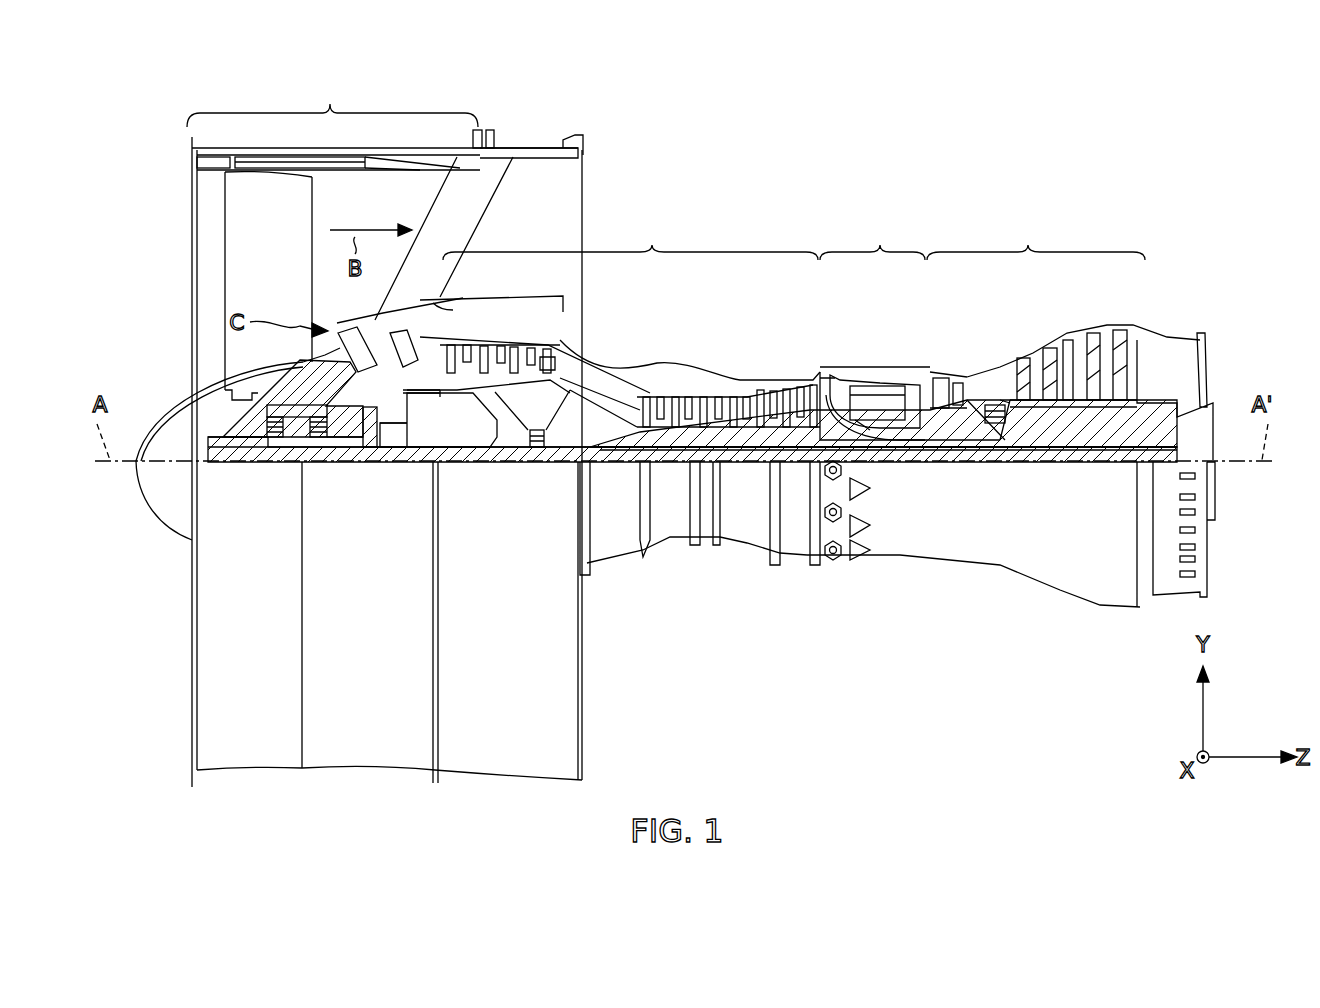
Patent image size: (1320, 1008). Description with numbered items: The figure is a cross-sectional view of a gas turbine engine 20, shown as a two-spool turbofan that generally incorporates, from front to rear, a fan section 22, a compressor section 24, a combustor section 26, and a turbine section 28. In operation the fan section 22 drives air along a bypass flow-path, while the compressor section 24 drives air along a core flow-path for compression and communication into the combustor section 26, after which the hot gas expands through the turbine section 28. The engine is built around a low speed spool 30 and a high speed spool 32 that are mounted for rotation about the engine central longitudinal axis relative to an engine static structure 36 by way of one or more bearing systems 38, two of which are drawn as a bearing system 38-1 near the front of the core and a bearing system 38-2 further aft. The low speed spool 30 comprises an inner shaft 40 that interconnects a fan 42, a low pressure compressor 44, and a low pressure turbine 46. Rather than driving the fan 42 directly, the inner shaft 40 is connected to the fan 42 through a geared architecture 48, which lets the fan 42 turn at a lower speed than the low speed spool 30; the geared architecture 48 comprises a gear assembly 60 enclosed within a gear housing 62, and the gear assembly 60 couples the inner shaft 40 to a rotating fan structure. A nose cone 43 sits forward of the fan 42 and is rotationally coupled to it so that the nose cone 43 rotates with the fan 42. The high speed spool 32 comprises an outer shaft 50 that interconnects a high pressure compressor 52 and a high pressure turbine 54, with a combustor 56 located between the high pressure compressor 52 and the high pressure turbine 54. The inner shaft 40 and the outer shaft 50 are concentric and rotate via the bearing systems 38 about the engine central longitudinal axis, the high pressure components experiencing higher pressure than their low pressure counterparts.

The gas turbine engine 20 is at (824, 148).
The fan section 22 is at (332, 105).
The compressor section 24 is at (630, 236).
The combustor section 26 is at (872, 236).
The turbine section 28 is at (1036, 236).
The low speed spool 30 is at (756, 482).
The high speed spool 32 is at (805, 375).
The engine static structure 36 is at (898, 535).
The bearing system 38 is at (988, 420).
The bearing system 38-1 is at (283, 447).
The bearing system 38-2 is at (533, 450).
The inner shaft 40 is at (603, 467).
The fan 42 is at (235, 265).
The nose cone 43 is at (178, 392).
The low pressure compressor 44 is at (517, 352).
The low pressure turbine 46 is at (1082, 318).
The geared architecture 48 is at (386, 497).
The outer shaft 50 is at (873, 443).
The high pressure compressor 52 is at (747, 393).
The high pressure turbine 54 is at (942, 380).
The combustor 56 is at (877, 390).
The gear assembly 60 is at (407, 423).
The gear housing 62 is at (407, 397).